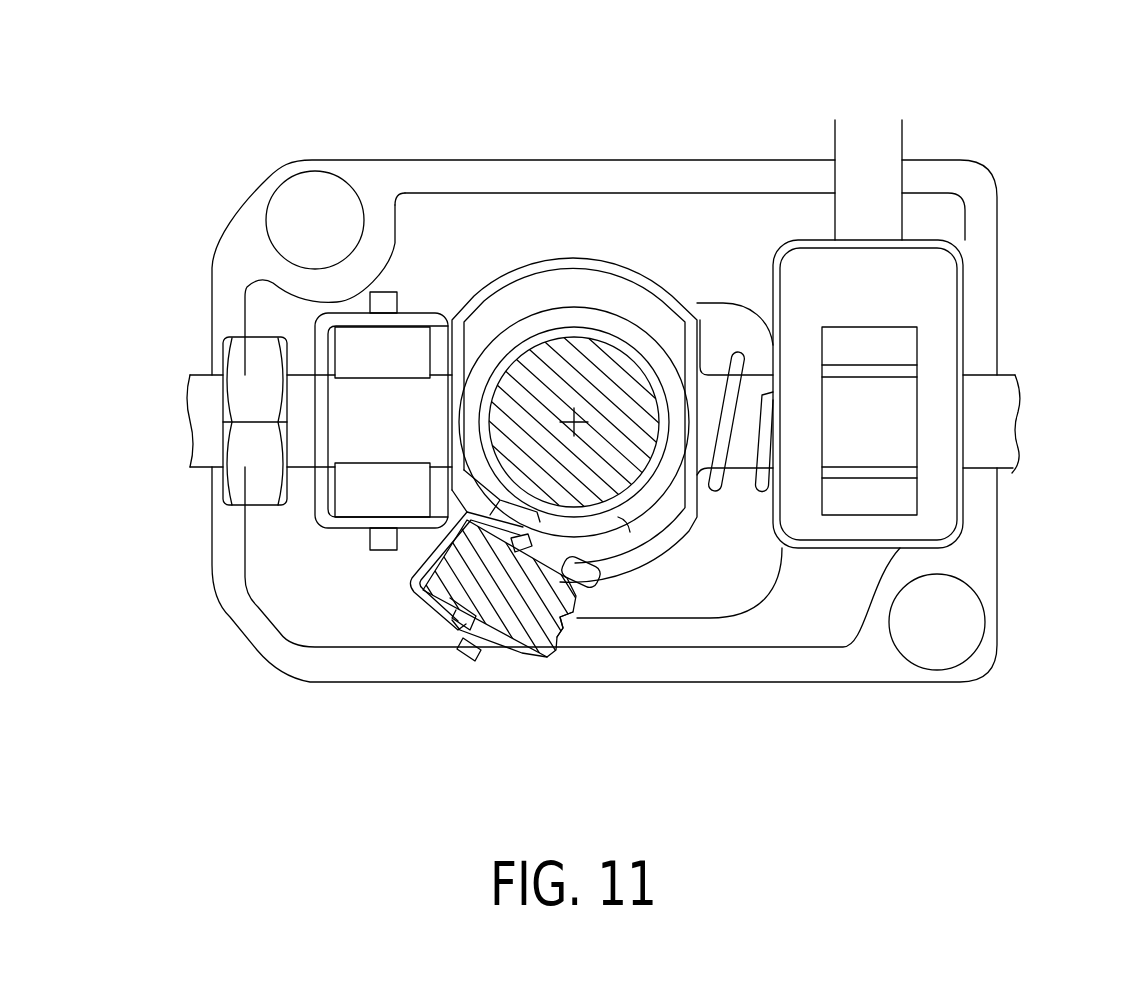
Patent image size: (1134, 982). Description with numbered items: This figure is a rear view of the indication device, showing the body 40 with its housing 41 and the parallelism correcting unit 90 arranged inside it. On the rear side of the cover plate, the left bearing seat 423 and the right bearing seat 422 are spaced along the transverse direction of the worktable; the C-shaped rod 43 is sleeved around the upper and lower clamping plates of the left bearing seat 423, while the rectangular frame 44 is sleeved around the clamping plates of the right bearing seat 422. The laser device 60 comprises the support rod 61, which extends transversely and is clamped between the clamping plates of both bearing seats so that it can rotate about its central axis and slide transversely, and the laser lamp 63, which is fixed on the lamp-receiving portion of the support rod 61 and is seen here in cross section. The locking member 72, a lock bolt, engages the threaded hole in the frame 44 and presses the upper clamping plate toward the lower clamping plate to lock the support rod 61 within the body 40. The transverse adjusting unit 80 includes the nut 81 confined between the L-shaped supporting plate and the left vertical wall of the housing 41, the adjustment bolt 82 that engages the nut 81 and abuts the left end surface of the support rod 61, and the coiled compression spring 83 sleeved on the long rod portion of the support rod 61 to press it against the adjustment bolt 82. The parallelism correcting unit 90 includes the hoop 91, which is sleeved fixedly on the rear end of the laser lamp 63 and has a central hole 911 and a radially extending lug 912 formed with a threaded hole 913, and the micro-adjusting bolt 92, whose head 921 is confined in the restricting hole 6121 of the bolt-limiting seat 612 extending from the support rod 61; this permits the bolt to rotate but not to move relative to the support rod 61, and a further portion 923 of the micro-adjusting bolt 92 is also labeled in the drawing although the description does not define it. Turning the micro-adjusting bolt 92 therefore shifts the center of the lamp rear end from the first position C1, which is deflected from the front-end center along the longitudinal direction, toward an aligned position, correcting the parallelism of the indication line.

The body 40 is at (1010, 160).
The housing 41 is at (985, 255).
The C-shaped rod 43 is at (318, 302).
The rectangular frame 44 is at (938, 325).
The right bearing seat 422 is at (905, 498).
The locking member 72 is at (880, 122).
The coiled compression spring 83 is at (735, 352).
The laser device 60 is at (643, 245).
The support rod 61 is at (574, 314).
The central hole 911 is at (530, 280).
The laser lamp 63 is at (578, 338).
The first position C1 is at (518, 358).
The transverse adjusting unit 80 is at (192, 345).
The adjustment bolt 82 is at (190, 445).
The nut 81 is at (243, 484).
The left bearing seat 423 is at (347, 492).
The parallelism correcting unit 90 is at (418, 621).
The micro-adjusting bolt 92 is at (535, 632).
The head 921 is at (440, 637).
The bolt-limiting seat 612 is at (407, 600).
The restricting hole 6121 is at (463, 630).
The lug 912 is at (470, 655).
The pin 923 is at (565, 635).
The threaded hole 913 is at (598, 583).
The hoop 91 is at (618, 520).